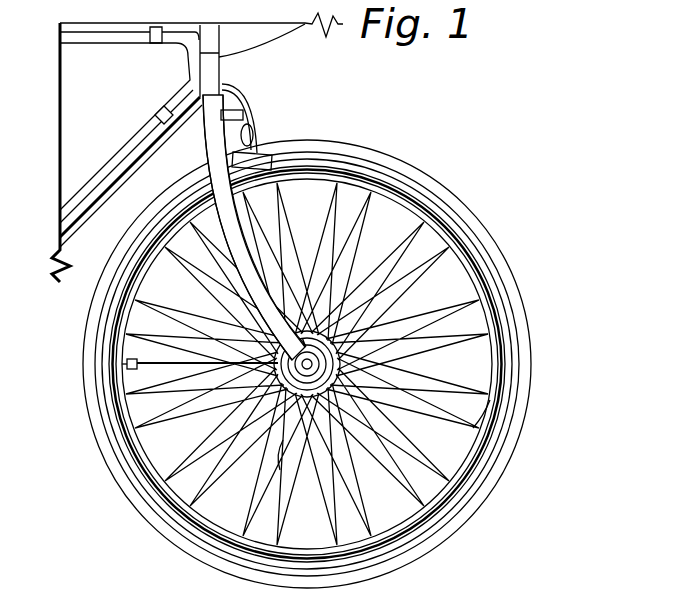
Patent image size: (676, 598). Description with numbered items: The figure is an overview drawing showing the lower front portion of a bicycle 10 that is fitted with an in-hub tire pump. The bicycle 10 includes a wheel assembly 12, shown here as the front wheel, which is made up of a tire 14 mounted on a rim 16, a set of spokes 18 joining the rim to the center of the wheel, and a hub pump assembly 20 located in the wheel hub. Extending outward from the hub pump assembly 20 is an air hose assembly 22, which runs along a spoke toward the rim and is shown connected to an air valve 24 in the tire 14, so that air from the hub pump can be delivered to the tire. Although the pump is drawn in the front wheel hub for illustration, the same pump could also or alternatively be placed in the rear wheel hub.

The bicycle 10 is at (485, 118).
The wheel assembly 12 is at (459, 186).
The tire 14 is at (502, 249).
The rim 16 is at (500, 353).
The spokes 18 is at (490, 400).
The hub pump assembly 20 is at (283, 453).
The air hose assembly 22 is at (143, 361).
The air valve 24 is at (123, 368).